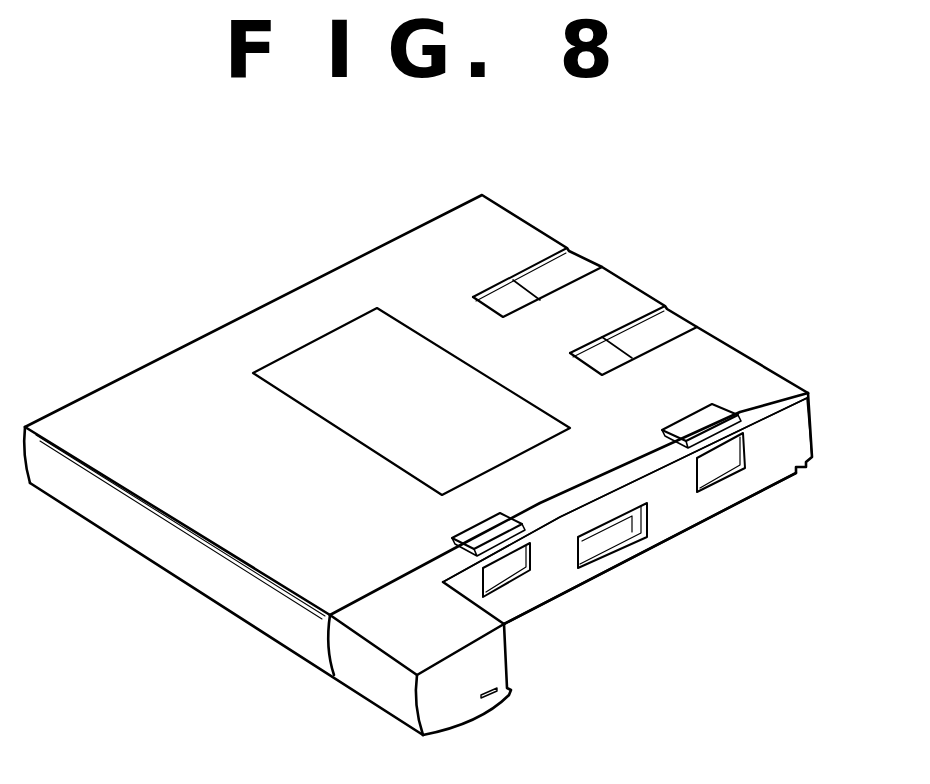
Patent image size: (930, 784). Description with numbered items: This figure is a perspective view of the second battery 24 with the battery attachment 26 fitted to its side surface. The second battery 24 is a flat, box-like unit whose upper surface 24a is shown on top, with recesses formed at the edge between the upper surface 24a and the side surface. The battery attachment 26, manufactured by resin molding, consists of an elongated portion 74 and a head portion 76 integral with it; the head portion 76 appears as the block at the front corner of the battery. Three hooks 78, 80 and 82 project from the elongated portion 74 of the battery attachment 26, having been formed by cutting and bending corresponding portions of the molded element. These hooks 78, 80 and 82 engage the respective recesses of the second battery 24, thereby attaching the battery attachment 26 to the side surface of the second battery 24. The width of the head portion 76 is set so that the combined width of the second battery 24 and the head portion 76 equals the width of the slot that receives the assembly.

The second battery 24 is at (418, 477).
The upper surface 24a is at (167, 398).
The battery attachment 26 is at (560, 591).
The elongated portion 74 is at (683, 508).
The head portion 76 is at (367, 677).
The hook 78 is at (475, 541).
The hook 80 is at (697, 431).
The hook 82 is at (603, 547).